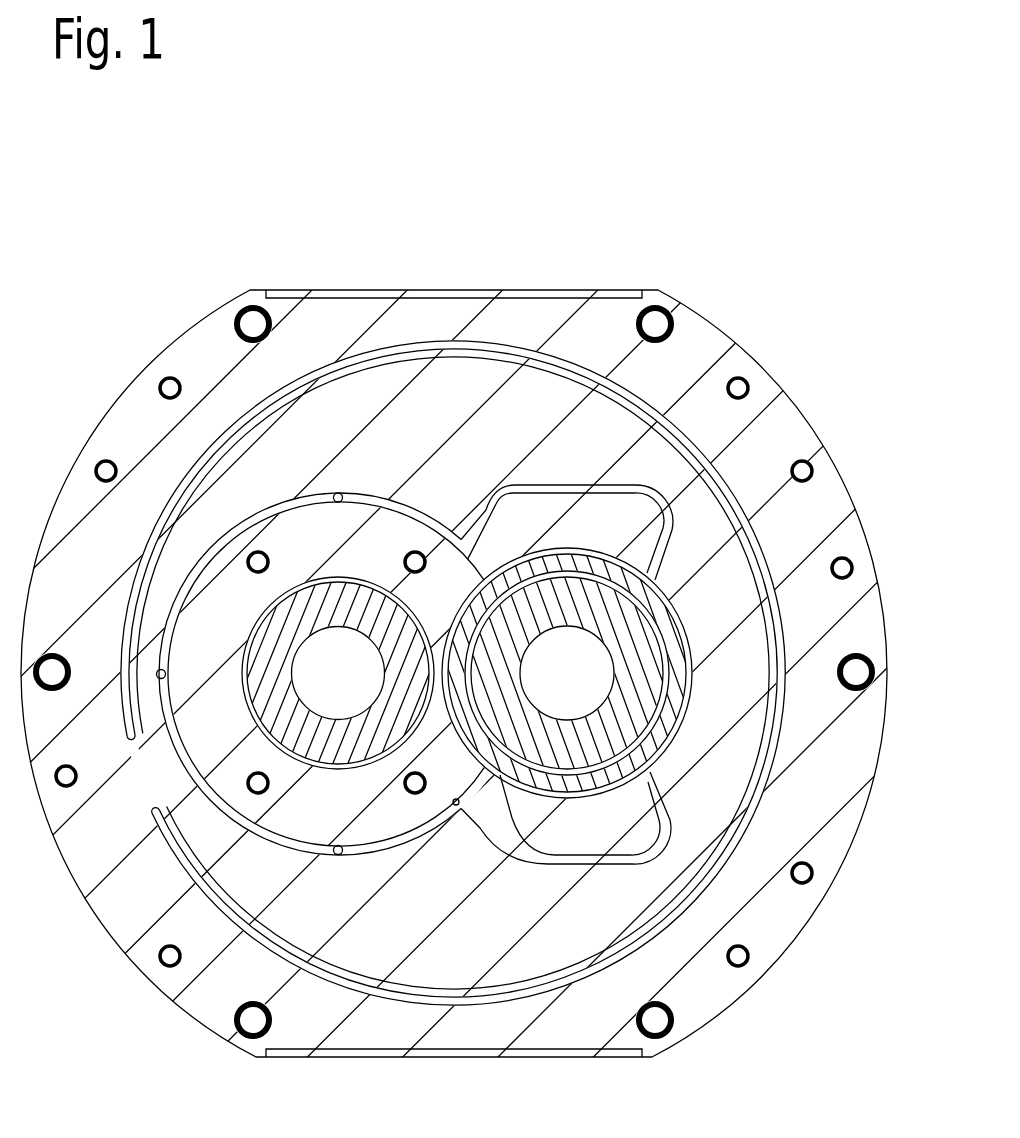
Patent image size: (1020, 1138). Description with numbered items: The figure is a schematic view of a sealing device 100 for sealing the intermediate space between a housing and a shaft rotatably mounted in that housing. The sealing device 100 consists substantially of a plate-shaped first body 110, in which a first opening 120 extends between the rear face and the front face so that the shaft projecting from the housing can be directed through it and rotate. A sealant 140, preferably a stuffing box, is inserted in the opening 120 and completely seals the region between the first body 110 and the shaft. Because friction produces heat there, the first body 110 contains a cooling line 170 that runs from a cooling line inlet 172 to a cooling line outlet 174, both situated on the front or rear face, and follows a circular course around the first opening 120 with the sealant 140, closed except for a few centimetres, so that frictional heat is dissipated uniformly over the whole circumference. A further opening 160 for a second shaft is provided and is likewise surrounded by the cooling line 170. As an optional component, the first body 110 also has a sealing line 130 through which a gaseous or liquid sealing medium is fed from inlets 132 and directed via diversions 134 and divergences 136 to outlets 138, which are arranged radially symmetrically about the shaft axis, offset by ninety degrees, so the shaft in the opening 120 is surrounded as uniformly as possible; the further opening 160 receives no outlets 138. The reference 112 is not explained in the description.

The sealing device 100 is at (553, 163).
The first body 110 is at (200, 325).
The housing body section 112 is at (780, 440).
The first opening 120 is at (608, 588).
The sealing line 130 is at (556, 489).
The inlets 132 is at (345, 497).
The diversions 134 is at (650, 822).
The divergences 136 is at (457, 804).
The outlets 138 is at (665, 570).
The sealant 140 is at (685, 683).
The further opening 160 is at (377, 592).
The cooling line 170 is at (763, 790).
The cooling line inlet 172 is at (135, 734).
The cooling line outlet 174 is at (160, 810).